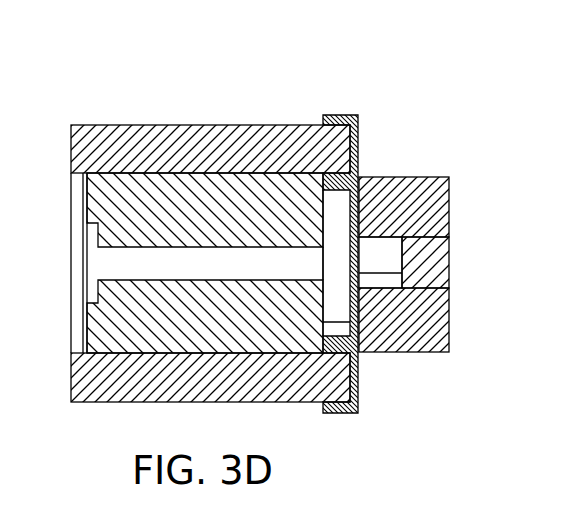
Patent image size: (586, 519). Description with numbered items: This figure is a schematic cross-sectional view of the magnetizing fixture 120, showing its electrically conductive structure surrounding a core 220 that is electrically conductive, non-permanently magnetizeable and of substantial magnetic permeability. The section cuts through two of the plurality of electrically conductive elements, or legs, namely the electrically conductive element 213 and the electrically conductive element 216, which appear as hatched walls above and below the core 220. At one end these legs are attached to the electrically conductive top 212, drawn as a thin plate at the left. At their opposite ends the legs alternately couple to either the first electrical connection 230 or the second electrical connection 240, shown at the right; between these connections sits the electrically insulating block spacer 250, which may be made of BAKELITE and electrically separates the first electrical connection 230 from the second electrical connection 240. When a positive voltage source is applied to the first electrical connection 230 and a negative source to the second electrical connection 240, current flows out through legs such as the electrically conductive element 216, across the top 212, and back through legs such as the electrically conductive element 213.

The magnetizing fixture 120 is at (255, 50).
The electrically conductive element 213 is at (131, 128).
The electrically conductive element 216 is at (153, 392).
The electrically conductive top 212 is at (72, 287).
The core 220 is at (97, 205).
The first electrical connection 230 is at (442, 176).
The second electrical connection 240 is at (441, 352).
The electrically insulating block spacer 250 is at (450, 269).